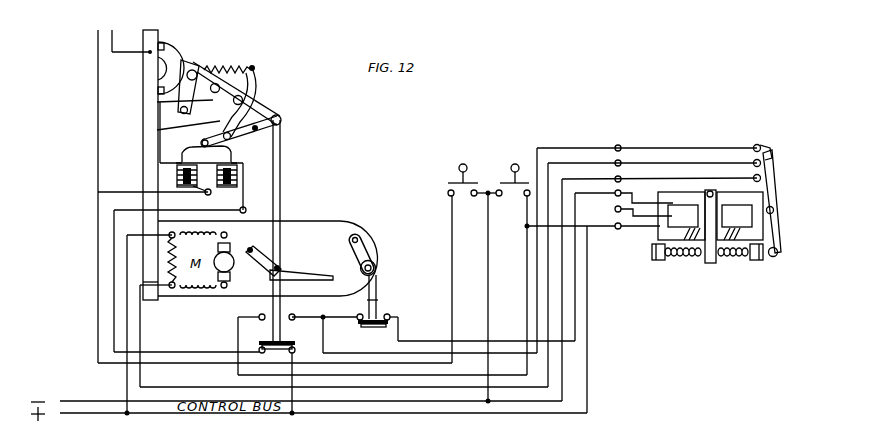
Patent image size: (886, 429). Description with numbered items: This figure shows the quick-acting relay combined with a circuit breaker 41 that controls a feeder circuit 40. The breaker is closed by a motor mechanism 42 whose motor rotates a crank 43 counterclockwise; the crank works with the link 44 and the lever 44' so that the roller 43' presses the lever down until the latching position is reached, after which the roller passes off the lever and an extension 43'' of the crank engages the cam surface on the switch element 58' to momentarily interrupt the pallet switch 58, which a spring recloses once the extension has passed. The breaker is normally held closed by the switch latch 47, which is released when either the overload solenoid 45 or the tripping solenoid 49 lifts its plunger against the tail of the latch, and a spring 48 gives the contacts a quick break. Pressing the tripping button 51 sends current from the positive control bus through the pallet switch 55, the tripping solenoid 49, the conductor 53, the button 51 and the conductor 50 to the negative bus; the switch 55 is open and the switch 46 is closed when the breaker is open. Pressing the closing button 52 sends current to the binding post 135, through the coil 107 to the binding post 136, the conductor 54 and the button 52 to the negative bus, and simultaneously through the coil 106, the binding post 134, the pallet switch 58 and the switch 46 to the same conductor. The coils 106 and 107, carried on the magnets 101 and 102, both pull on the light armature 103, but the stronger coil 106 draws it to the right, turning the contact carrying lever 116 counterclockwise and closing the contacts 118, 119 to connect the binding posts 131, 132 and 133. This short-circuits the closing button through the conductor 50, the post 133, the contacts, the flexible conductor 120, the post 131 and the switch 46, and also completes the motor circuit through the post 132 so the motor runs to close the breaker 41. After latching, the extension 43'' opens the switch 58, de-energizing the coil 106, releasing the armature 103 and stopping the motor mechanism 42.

The feeder circuit 40 is at (98, 53).
The circuit breaker 41 is at (192, 60).
The motor mechanism 42 is at (313, 221).
The crank 43 is at (375, 245).
The roller 43' is at (389, 264).
The extension of the crank 43'' is at (394, 296).
The link 44 is at (294, 228).
The lever 44' is at (289, 263).
The overload solenoid 45 is at (177, 176).
The switch 46 is at (260, 318).
The switch latch 47 is at (240, 140).
The spring 48 is at (250, 66).
The tripping solenoid 49 is at (209, 193).
The conductor 50 is at (489, 278).
The tripping button 51 is at (472, 263).
The closing button 52 is at (513, 188).
The conductor 53 is at (98, 310).
The conductor 54 is at (527, 330).
The pallet switch 55 is at (204, 377).
The pallet switch 58 is at (432, 333).
The switch element 58' is at (391, 300).
The magnet 101 is at (681, 214).
The magnet 102 is at (740, 214).
The armature 103 is at (706, 268).
The energizing coil 106 is at (740, 232).
The energizing coil 107 is at (680, 232).
The contact carrying lever 116 is at (787, 218).
The relay contact 118 is at (771, 157).
The relay contact 119 is at (753, 178).
The flexible conductor 120 is at (775, 146).
The binding post 131 is at (647, 244).
The binding post 132 is at (448, 269).
The binding post 133 is at (659, 284).
The binding post 134 is at (624, 261).
The binding post 135 is at (628, 206).
The binding post 136 is at (593, 313).